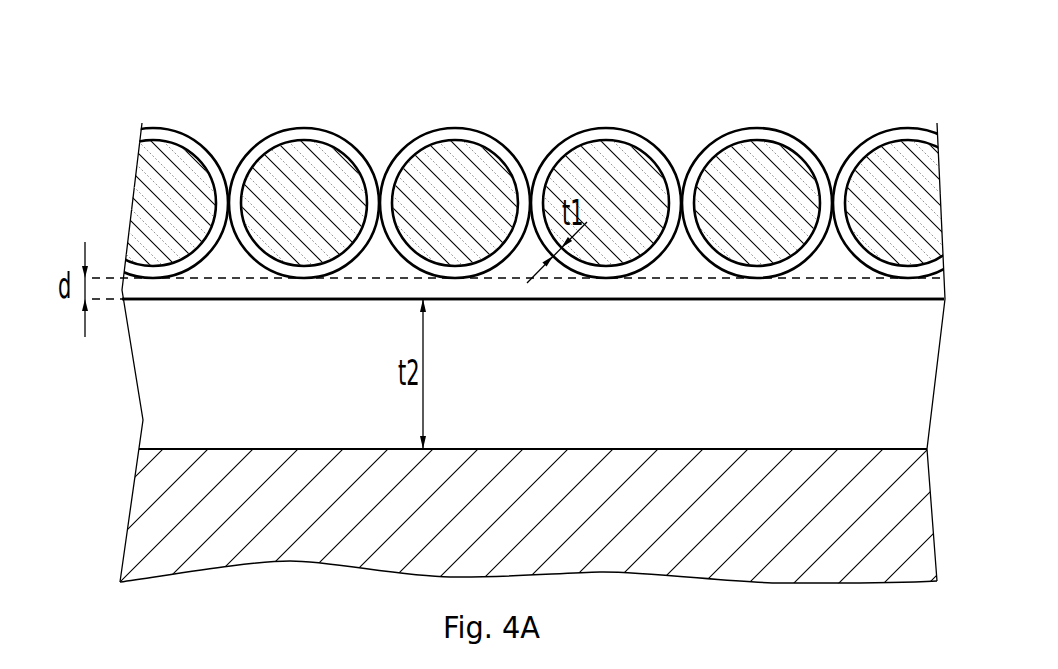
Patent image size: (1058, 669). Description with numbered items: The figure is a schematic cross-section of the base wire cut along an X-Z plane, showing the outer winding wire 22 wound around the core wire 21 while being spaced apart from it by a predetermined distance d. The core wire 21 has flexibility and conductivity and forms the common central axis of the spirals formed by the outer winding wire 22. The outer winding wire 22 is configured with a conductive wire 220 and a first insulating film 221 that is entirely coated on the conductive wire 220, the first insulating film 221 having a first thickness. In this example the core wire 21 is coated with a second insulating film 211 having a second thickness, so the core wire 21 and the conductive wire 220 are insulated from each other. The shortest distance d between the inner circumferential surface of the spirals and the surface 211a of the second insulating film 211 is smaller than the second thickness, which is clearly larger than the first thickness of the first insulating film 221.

The outer winding wire 22 is at (529, 139).
The first insulating film 221 is at (433, 133).
The conductive wire 220 is at (388, 52).
The surface of the second insulating film 211a is at (702, 298).
The second insulating film 211 is at (152, 377).
The core wire 21 is at (135, 512).